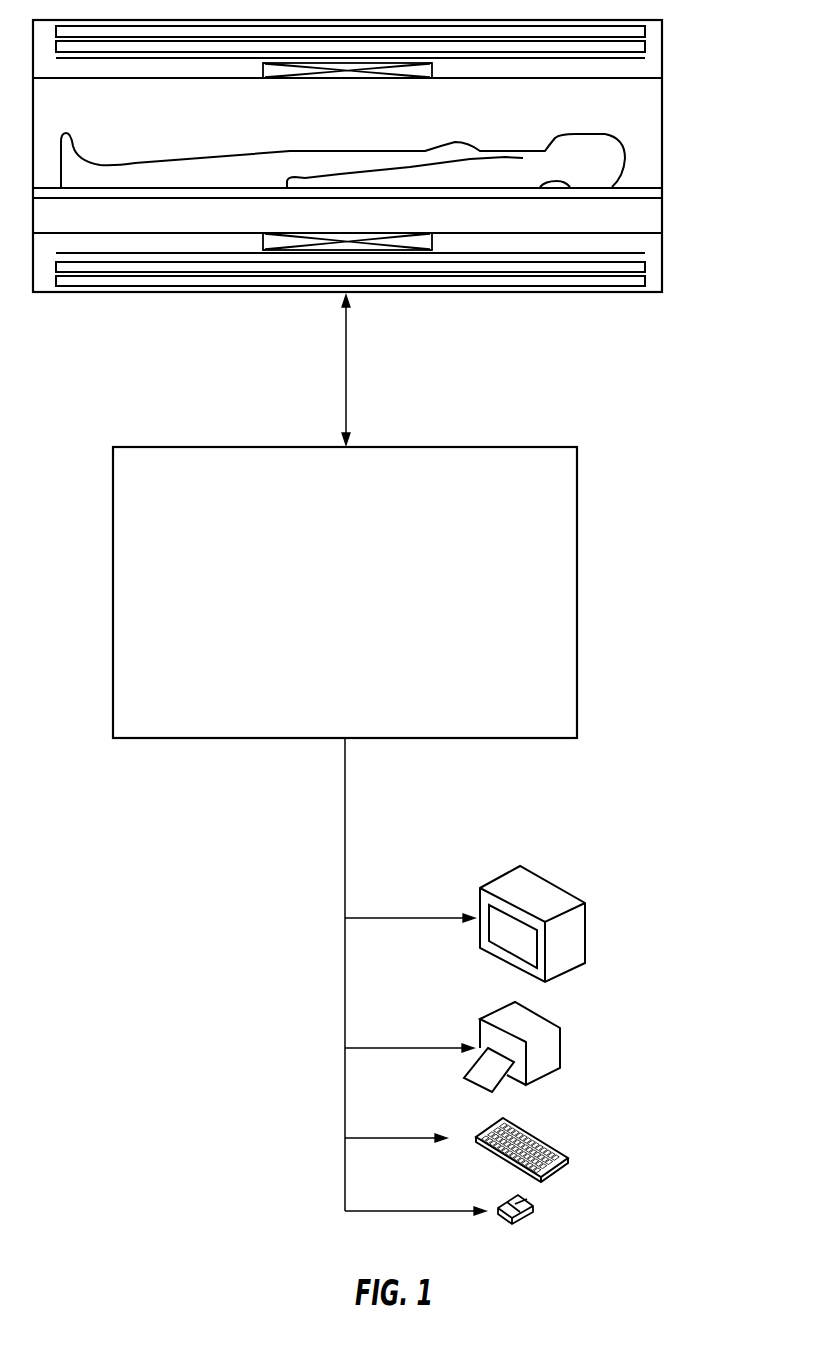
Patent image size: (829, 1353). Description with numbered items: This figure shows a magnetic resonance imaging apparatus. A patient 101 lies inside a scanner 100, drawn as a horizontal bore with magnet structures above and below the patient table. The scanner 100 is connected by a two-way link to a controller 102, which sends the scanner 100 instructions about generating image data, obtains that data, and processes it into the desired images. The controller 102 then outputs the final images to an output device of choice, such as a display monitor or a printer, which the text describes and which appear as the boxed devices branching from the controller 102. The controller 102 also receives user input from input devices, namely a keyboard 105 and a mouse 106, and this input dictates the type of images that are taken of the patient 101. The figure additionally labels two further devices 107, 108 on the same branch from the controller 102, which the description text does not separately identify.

The scanner 100 is at (663, 113).
The patient 101 is at (200, 172).
The controller 102 is at (367, 620).
The keyboard 105 is at (573, 935).
The mouse 106 is at (548, 1052).
The keyboard 107 is at (560, 1145).
The mouse 108 is at (533, 1213).